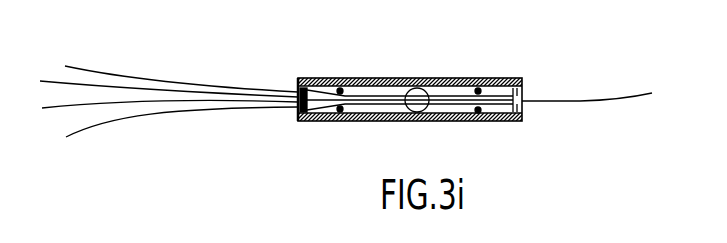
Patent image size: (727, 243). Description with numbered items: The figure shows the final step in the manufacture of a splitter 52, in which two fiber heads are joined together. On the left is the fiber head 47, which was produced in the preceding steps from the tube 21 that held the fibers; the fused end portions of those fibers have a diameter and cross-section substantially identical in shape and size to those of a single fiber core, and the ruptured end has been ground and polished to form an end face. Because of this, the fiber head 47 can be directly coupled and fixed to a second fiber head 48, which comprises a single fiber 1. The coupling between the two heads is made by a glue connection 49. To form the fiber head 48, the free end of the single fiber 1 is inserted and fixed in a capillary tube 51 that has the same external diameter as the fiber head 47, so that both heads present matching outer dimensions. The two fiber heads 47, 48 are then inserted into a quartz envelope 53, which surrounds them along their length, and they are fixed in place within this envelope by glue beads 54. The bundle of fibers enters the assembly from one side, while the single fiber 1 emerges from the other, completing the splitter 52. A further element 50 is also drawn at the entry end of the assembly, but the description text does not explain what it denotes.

The single fiber 1 is at (58, 108).
The tube 21 is at (374, 99).
The fiber head 47 is at (323, 78).
The fiber head 48 is at (497, 123).
The glue connection 49 is at (431, 88).
The fiber holder 50 is at (305, 122).
The capillary tube 51 is at (454, 99).
The splitter 52 is at (311, 140).
The quartz envelope 53 is at (380, 122).
The glue beads 54 is at (340, 88).